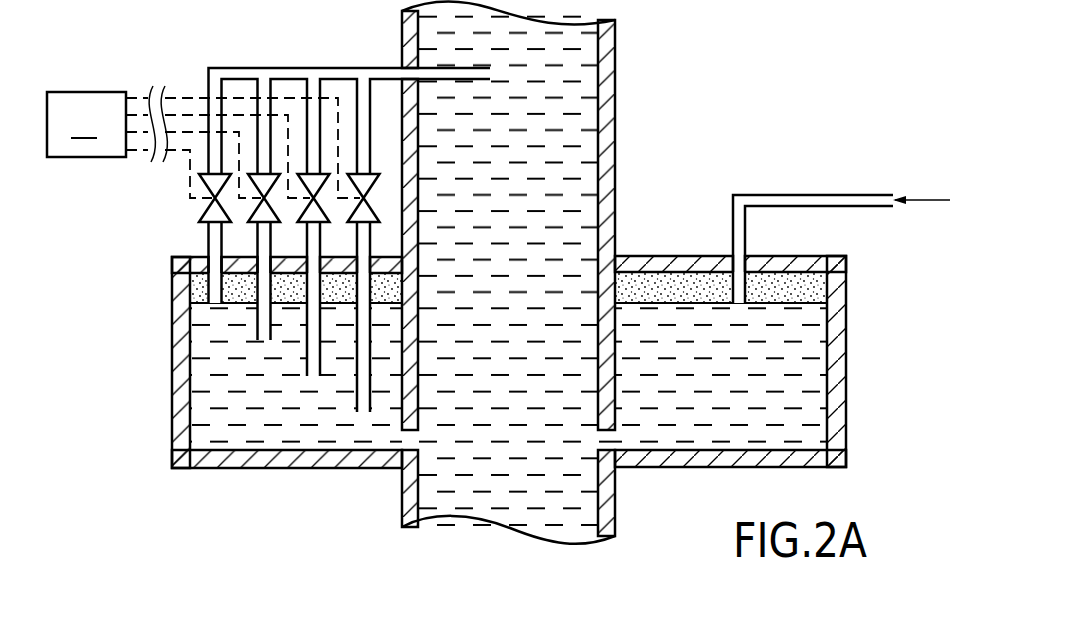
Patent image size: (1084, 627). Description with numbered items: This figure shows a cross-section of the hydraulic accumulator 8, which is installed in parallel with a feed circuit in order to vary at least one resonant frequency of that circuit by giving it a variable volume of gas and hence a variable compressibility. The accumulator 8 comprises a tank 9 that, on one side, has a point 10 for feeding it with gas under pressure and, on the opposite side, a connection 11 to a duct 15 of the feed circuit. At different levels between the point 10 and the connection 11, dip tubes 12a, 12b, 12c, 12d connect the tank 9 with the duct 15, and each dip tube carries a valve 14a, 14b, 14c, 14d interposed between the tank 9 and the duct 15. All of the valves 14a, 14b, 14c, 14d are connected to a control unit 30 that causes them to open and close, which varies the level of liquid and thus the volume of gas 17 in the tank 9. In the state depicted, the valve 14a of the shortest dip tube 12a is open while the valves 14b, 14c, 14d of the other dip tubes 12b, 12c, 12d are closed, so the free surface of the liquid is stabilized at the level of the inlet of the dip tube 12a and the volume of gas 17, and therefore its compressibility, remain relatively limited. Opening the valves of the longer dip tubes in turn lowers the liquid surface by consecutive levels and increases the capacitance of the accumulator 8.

The hydraulic accumulator 8 is at (878, 338).
The tank 9 is at (181, 438).
The point for feeding gas under pressure 10 is at (735, 270).
The connection 11 is at (407, 441).
The dip tube 12a is at (212, 291).
The dip tube 12b is at (263, 320).
The dip tube 12c is at (312, 352).
The dip tube 12d is at (356, 397).
The valve 14a is at (212, 187).
The valve 14b is at (259, 219).
The valve 14c is at (306, 221).
The valve 14d is at (355, 222).
The duct 15 is at (617, 84).
The volume of gas 17 is at (672, 283).
The control unit 30 is at (203, 142).